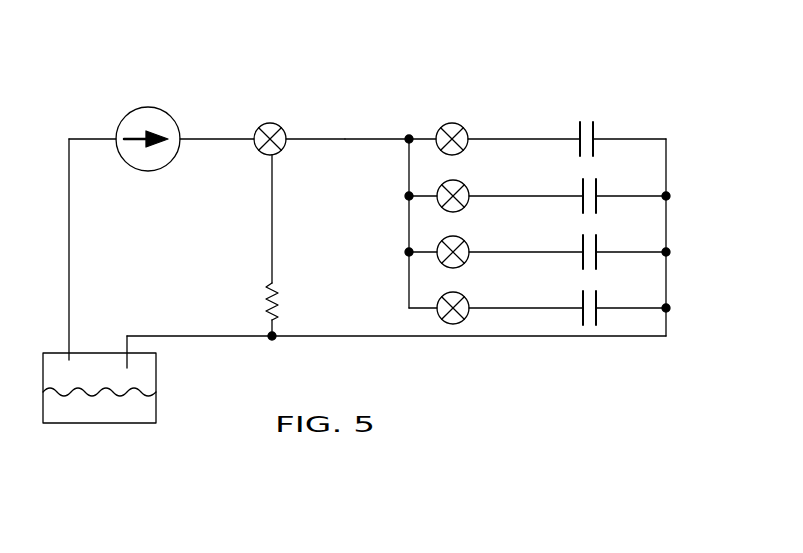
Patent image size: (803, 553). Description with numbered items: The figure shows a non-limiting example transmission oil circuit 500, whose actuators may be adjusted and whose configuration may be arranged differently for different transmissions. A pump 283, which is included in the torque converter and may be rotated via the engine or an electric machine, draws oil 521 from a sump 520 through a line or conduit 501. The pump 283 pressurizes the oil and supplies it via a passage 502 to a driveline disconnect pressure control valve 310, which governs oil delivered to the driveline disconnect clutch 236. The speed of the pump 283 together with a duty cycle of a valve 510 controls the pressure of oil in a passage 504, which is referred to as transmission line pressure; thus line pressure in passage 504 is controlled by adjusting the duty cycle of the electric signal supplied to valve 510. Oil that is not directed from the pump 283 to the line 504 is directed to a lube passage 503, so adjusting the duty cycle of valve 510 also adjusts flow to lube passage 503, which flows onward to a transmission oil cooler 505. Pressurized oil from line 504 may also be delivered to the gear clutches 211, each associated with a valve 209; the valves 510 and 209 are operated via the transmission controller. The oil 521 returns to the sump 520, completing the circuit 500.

The circuit 500 is at (668, 60).
The pump 283 is at (150, 107).
The conduit 501 is at (69, 213).
The passage 502 is at (218, 139).
The valve 510 is at (320, 120).
The passage 504 is at (355, 139).
The lube passage 503 is at (272, 205).
The transmission oil cooler 505 is at (272, 291).
The driveline disconnect pressure control valve 310 is at (468, 135).
The driveline disconnect clutch 236 is at (597, 133).
The valve 209 is at (463, 190).
The gear clutches 211 is at (597, 190).
The sump 520 is at (156, 389).
The oil 521 is at (75, 407).